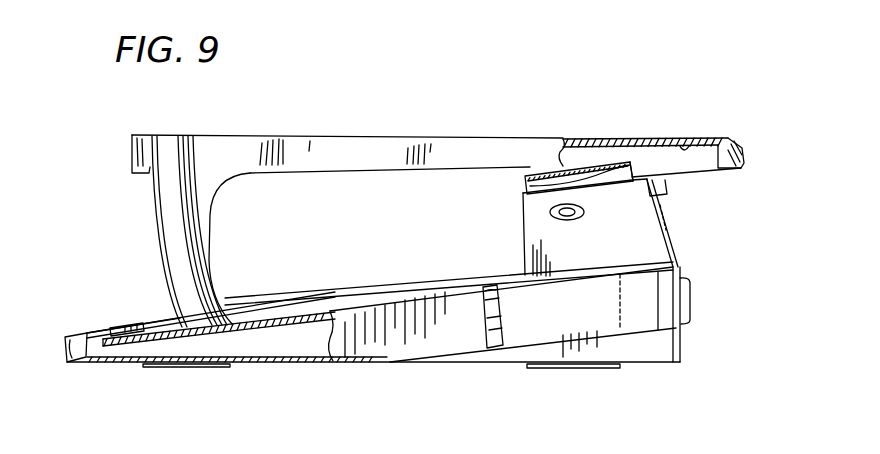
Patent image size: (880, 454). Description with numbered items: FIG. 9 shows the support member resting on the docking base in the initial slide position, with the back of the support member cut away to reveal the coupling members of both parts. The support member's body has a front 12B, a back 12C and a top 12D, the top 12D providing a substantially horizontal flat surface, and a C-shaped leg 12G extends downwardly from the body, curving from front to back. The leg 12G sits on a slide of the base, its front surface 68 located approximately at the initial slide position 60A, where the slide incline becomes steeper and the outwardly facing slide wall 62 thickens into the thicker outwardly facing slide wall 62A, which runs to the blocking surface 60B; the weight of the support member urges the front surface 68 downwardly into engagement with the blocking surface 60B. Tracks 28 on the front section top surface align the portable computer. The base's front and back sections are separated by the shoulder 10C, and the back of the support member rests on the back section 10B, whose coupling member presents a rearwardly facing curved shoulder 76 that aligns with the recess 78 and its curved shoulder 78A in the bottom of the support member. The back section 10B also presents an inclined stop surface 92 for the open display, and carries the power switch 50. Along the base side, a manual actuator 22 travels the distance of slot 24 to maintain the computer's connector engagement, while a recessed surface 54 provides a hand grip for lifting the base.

The front 12B is at (131, 147).
The back 12C is at (742, 153).
The top 12D is at (373, 136).
The leg 12G is at (182, 210).
The inclined stop surface 92 is at (525, 177).
The rearwardly facing curved shoulder 76 is at (638, 168).
The support member coupling member or recess 78 is at (693, 147).
The curved shaped shoulder 78A is at (712, 168).
The shoulder 10C is at (523, 215).
The back section 10B is at (655, 243).
The power switch 50 is at (584, 215).
The tracks 28 is at (268, 300).
The outwardly facing slide wall 62 is at (353, 305).
The thicker outwardly facing slide wall 62A is at (135, 330).
The initial slide position 60A is at (176, 340).
The blocking surface 60B is at (110, 327).
The front surface 68 is at (172, 287).
The slot 24 is at (453, 303).
The manual actuator 22 is at (491, 352).
The recessed surface 54 is at (647, 347).